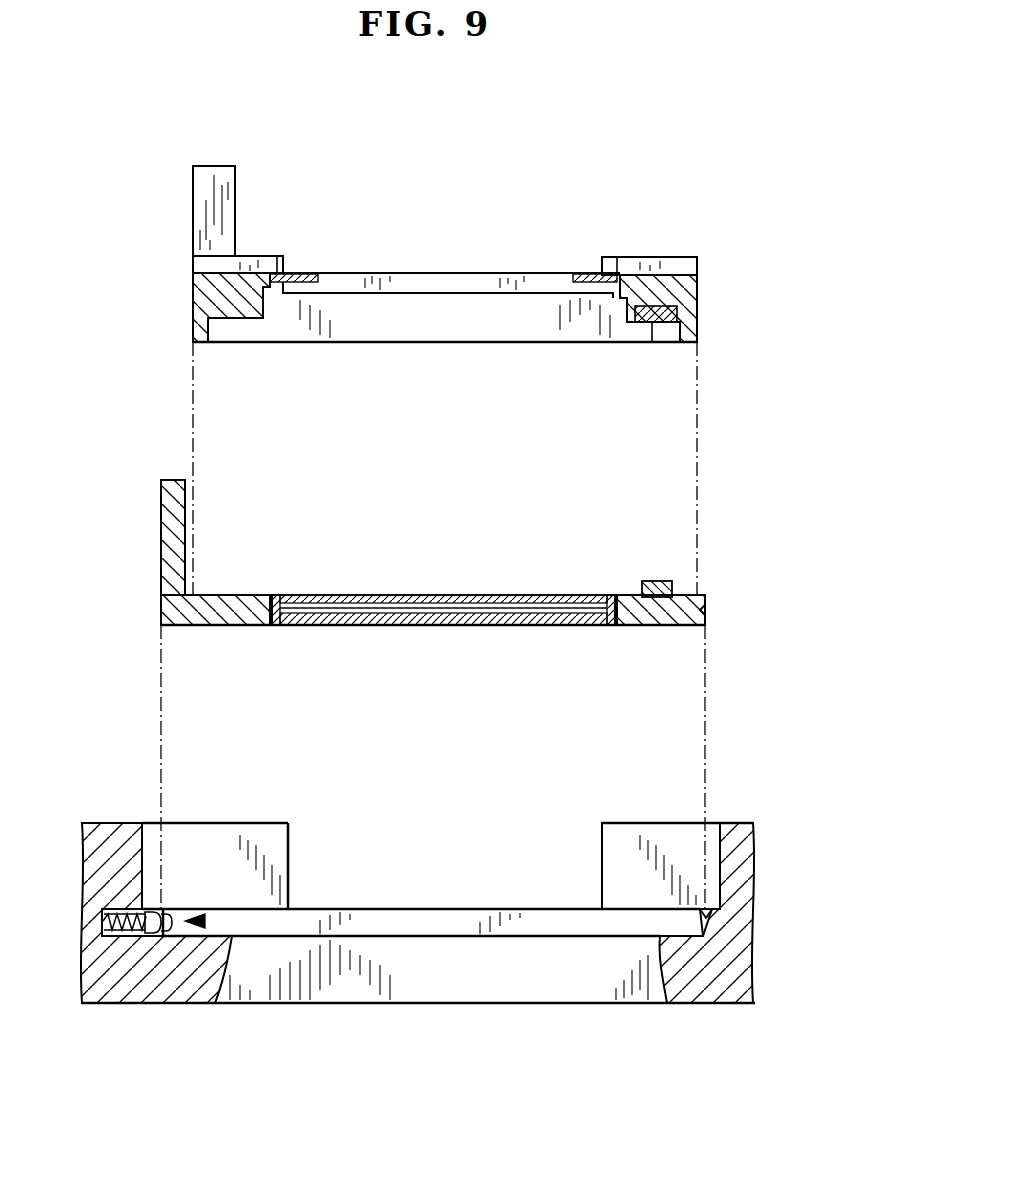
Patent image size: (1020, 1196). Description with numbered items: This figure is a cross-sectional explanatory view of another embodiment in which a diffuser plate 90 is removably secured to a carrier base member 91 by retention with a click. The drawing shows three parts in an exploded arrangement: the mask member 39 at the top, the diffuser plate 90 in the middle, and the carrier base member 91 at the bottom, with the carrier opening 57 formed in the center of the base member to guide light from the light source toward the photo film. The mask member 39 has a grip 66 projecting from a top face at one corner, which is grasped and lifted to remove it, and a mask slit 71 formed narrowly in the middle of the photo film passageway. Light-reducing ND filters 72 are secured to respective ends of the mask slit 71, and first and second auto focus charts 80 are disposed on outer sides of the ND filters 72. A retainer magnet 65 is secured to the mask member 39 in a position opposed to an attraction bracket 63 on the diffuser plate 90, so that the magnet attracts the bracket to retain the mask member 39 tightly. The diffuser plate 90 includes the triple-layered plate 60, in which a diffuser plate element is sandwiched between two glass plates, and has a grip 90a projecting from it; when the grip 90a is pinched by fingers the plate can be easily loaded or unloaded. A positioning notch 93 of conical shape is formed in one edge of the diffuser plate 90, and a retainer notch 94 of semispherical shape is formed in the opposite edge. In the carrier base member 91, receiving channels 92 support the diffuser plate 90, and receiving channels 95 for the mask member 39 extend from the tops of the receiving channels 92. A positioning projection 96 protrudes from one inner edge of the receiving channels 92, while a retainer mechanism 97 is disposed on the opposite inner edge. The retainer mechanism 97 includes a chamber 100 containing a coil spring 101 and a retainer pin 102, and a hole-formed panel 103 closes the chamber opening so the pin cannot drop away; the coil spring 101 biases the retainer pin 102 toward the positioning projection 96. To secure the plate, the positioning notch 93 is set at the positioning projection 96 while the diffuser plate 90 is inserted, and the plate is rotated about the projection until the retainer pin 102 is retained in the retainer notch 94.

The mask member 39 is at (669, 256).
The carrier opening 57 is at (653, 965).
The triple-layered plate 60 is at (448, 595).
The attraction bracket 63 is at (659, 581).
The retainer magnet 65 is at (655, 322).
The grip 66 is at (215, 166).
The mask slit 71 is at (451, 273).
The ND filter 72 is at (307, 273).
The auto focus chart 80 is at (281, 256).
The diffuser plate 90 is at (232, 592).
The grip 90a is at (168, 480).
The carrier base member 91 is at (105, 822).
The receiving channels 92 is at (413, 920).
The positioning notch 93 is at (707, 610).
The retainer notch 94 is at (163, 603).
The receiving channels 95 is at (652, 840).
The positioning projection 96 is at (700, 921).
The retainer mechanism 97 is at (204, 921).
The chamber 100 is at (114, 936).
The coil spring 101 is at (139, 936).
The retainer pin 102 is at (172, 915).
The hole-formed panel 103 is at (152, 905).